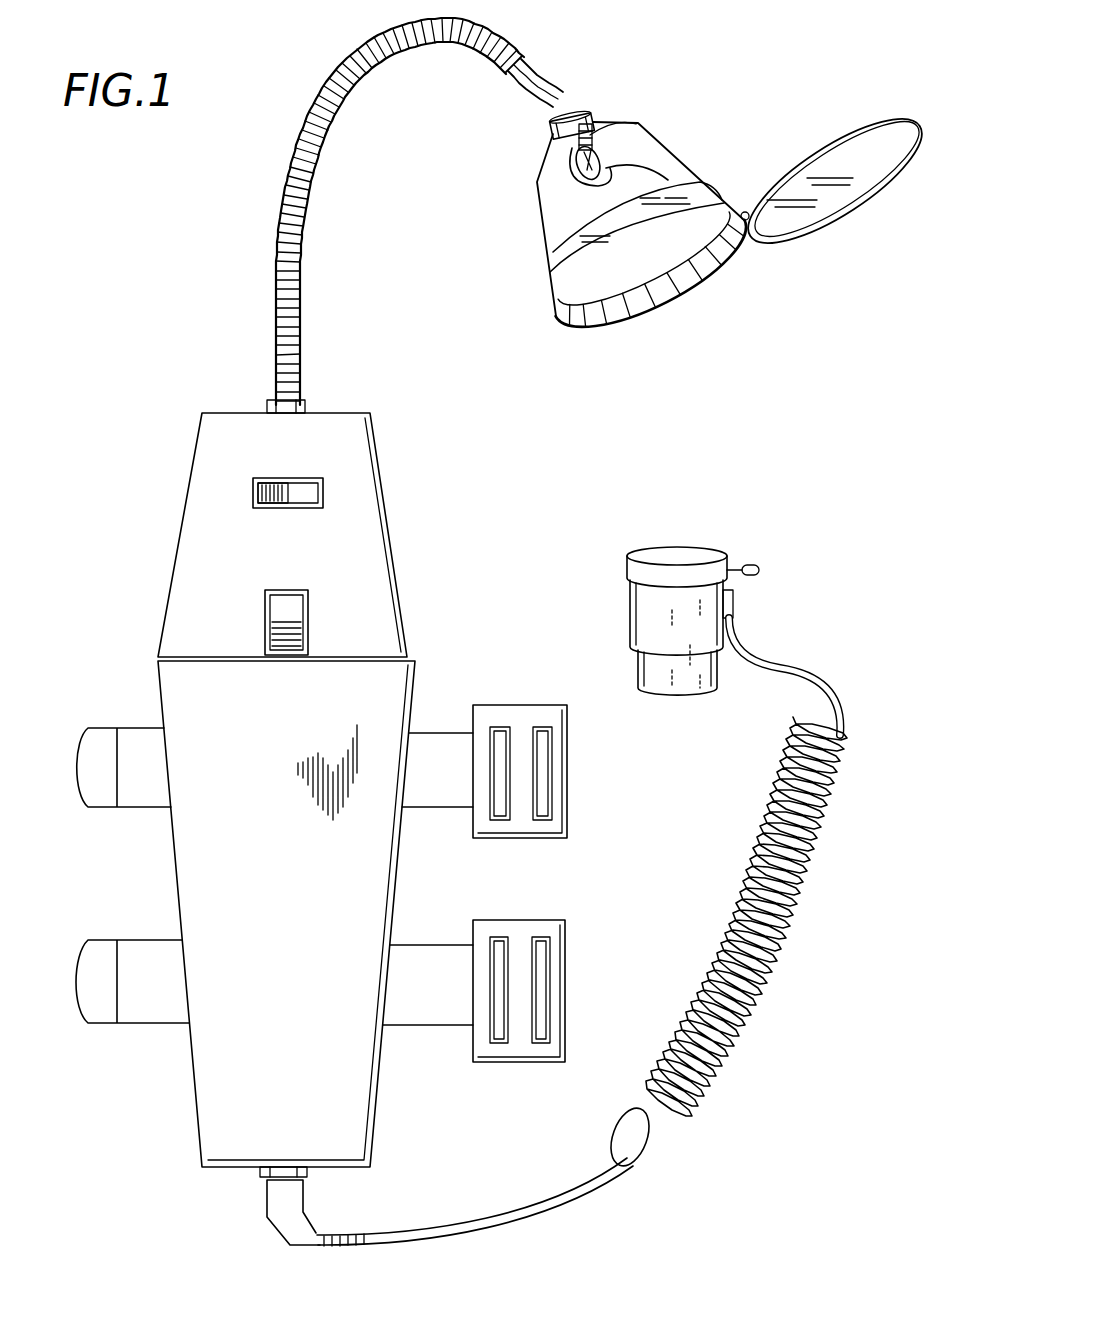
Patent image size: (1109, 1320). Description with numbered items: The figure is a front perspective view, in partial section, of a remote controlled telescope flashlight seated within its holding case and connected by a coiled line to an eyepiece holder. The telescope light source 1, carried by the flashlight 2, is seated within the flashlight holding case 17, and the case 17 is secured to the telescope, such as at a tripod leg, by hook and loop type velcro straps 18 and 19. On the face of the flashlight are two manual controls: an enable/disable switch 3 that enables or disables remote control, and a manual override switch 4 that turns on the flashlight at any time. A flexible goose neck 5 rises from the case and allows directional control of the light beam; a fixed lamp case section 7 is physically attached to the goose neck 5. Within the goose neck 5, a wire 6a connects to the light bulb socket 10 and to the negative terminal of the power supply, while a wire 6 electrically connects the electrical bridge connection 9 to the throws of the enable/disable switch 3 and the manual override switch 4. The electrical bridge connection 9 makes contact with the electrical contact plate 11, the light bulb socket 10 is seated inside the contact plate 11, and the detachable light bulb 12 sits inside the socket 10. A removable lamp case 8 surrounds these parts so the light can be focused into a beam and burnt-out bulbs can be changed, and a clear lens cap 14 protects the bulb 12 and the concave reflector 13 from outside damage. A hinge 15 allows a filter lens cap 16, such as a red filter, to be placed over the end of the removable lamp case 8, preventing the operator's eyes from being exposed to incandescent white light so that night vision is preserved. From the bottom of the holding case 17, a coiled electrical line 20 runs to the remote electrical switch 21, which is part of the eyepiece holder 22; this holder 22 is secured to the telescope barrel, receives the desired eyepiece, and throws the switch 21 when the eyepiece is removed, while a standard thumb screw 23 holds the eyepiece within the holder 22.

The light source 1 is at (220, 328).
The flashlight 2 is at (195, 553).
The enable/disable switch 3 is at (307, 496).
The manual override switch 4 is at (290, 607).
The goose neck 5 is at (344, 66).
The wire 6 is at (540, 86).
The wire 6a is at (518, 62).
The fixed lamp case section 7 is at (553, 138).
The lamp case 8 is at (541, 205).
The electrical bridge connection 9 is at (598, 118).
The light bulb socket 10 is at (600, 124).
The electrical contact plate 11 is at (620, 130).
The detachable light bulb 12 is at (653, 173).
The concave reflector 13 is at (678, 164).
The clear lens cap 14 is at (555, 283).
The hinge 15 is at (741, 222).
The filter lens cap 16 is at (838, 150).
The holding case 17 is at (183, 707).
The velcro strap 18 is at (522, 720).
The velcro strap 19 is at (525, 935).
The coiled electrical line 20 is at (443, 1230).
The remote electrical switch 21 is at (735, 600).
The eyepiece holder 22 is at (655, 608).
The thumb screw 23 is at (750, 566).